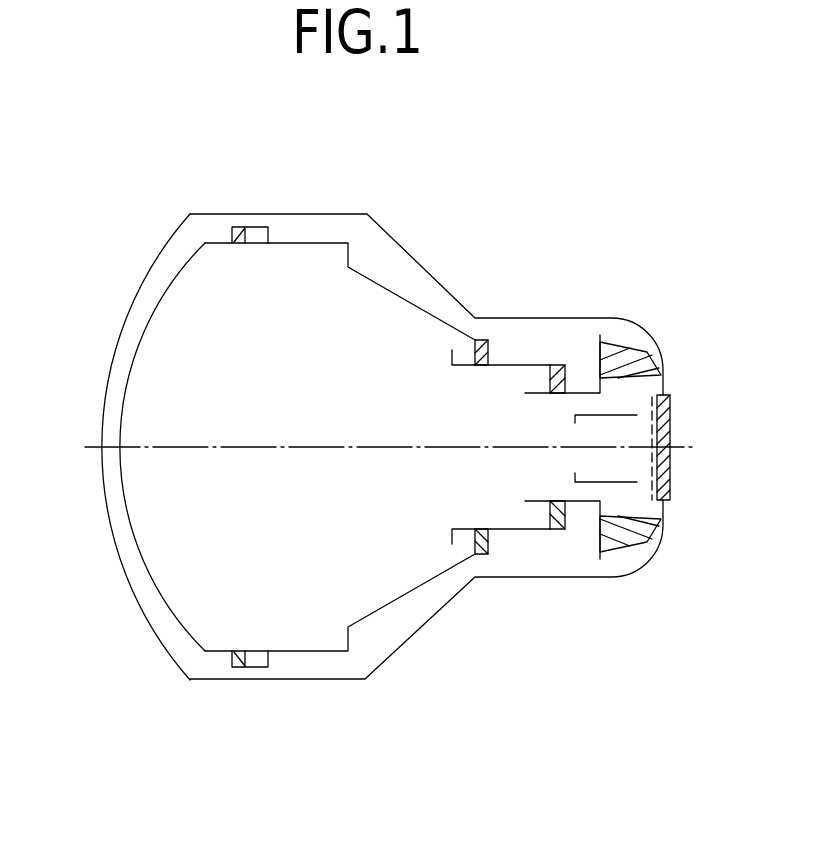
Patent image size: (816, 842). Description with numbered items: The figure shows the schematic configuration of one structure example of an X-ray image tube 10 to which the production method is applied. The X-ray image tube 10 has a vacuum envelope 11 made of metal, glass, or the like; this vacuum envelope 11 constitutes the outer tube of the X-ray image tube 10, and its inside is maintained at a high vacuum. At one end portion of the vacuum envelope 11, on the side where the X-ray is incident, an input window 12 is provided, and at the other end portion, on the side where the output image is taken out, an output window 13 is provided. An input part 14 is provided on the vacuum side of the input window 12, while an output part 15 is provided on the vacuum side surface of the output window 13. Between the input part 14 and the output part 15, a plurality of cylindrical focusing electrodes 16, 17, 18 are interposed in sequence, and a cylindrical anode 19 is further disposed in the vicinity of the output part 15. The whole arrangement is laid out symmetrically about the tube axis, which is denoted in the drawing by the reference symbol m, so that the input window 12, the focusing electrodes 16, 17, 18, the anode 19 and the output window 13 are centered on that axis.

The X-ray image tube 10 is at (524, 189).
The vacuum envelope 11 is at (428, 620).
The input window 12 is at (107, 378).
The output window 13 is at (670, 483).
The input part 14 is at (142, 325).
The output part 15 is at (637, 494).
The focusing electrode 16 is at (312, 241).
The focusing electrode 17 is at (520, 363).
The focusing electrode 18 is at (602, 337).
The anode 19 is at (631, 410).
The tube axis m is at (680, 447).